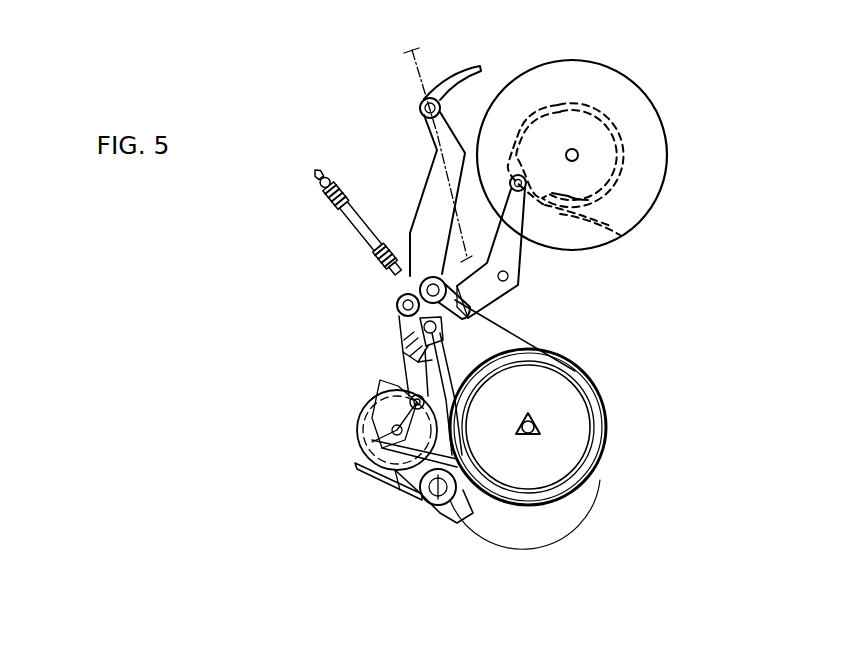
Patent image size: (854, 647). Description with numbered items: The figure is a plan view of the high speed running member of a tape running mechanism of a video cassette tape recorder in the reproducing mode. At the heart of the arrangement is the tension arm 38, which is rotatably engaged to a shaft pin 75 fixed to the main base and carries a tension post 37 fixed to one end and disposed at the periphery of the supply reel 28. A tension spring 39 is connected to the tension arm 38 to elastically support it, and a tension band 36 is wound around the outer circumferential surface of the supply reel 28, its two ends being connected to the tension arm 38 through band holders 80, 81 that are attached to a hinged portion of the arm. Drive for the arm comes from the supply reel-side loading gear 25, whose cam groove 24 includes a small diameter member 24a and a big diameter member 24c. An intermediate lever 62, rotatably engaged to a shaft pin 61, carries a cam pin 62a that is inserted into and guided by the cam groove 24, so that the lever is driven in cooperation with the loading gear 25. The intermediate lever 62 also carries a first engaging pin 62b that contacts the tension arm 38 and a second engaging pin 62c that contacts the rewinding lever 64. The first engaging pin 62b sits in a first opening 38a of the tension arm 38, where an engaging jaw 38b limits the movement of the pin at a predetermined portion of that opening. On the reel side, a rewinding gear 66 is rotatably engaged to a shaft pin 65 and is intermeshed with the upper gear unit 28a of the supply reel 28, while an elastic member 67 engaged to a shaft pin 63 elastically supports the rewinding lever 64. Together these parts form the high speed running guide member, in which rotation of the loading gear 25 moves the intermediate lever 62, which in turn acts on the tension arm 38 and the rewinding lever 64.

The cam groove 24 is at (627, 140).
The small diameter member 24a is at (587, 203).
The big diameter member 24c is at (607, 237).
The supply reel-side loading gear 25 is at (607, 66).
The supply reel 28 is at (577, 437).
The upper gear unit 28a is at (600, 463).
The tension band 36 is at (560, 502).
The tension post 37 is at (441, 94).
The tension arm 38 is at (423, 190).
The first opening 38a is at (410, 383).
The engaging jaw 38b is at (412, 346).
The tension spring 39 is at (350, 220).
The shaft pin 61 is at (507, 277).
The intermediate lever 62 is at (500, 302).
The cam pin 62a is at (527, 117).
The first engaging pin 62b is at (418, 324).
The second engaging pin 62c is at (380, 440).
The shaft pin 63 is at (443, 513).
The rewinding lever 64 is at (463, 515).
The shaft pin 65 is at (360, 470).
The rewinding gear 66 is at (366, 438).
The elastic member 67 is at (400, 490).
The shaft pin 75 is at (398, 300).
The band holder 80 is at (470, 312).
The band holder 81 is at (447, 328).